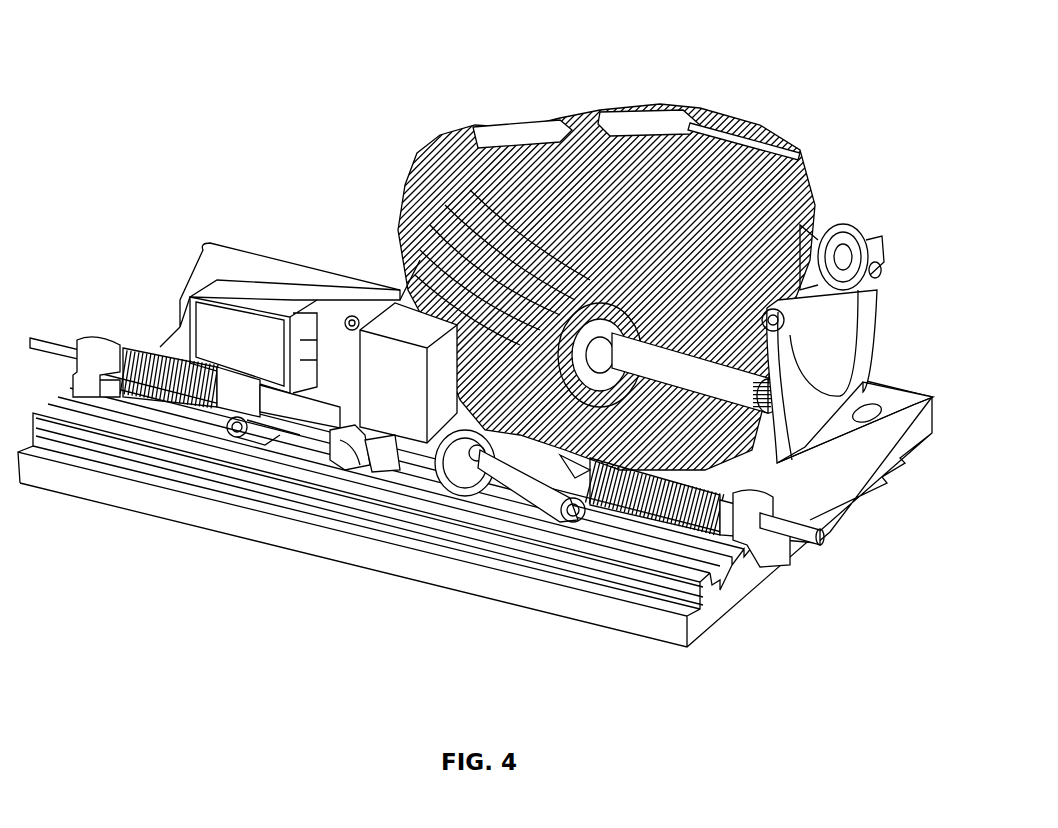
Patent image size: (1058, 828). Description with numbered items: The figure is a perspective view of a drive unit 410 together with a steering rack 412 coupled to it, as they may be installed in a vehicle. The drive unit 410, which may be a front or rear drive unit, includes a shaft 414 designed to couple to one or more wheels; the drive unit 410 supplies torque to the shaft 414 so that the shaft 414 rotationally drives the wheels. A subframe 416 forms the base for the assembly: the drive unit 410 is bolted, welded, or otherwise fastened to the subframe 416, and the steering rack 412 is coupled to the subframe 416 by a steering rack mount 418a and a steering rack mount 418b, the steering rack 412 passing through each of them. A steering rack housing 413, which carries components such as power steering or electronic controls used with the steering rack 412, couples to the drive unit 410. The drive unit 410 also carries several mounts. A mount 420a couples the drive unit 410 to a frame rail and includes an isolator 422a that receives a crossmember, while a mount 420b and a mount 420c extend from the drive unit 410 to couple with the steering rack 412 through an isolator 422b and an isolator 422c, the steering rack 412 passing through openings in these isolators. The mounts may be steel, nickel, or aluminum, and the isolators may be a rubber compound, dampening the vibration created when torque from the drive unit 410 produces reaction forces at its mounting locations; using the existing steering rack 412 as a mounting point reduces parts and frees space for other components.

The drive unit 410 is at (600, 108).
The steering rack 412 is at (277, 425).
The steering rack housing 413 is at (392, 312).
The shaft 414 is at (835, 443).
The subframe 416 is at (577, 620).
The steering rack mount 418a is at (763, 562).
The steering rack mount 418b is at (85, 400).
The mount 420a is at (840, 207).
The mount 420b is at (442, 483).
The mount 420c is at (335, 447).
The isolator 422a is at (872, 232).
The isolator 422b is at (480, 480).
The isolator 422c is at (372, 447).